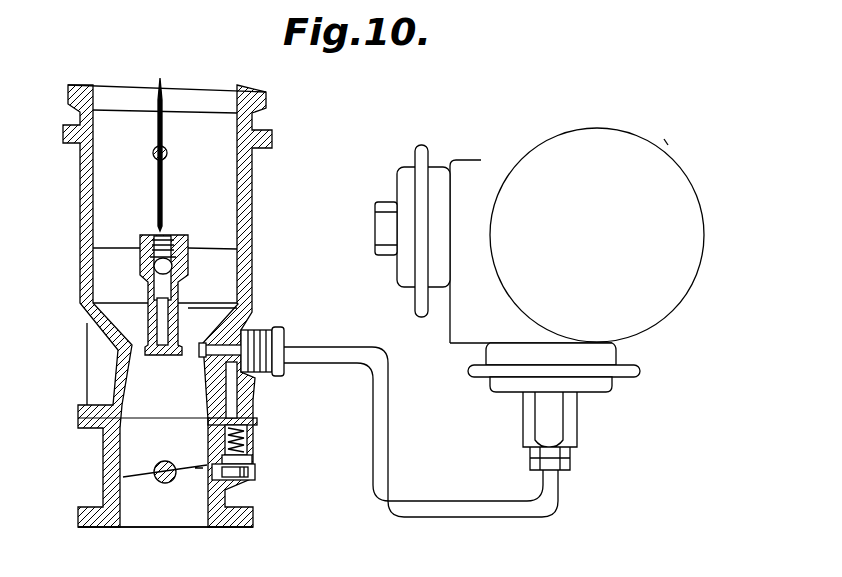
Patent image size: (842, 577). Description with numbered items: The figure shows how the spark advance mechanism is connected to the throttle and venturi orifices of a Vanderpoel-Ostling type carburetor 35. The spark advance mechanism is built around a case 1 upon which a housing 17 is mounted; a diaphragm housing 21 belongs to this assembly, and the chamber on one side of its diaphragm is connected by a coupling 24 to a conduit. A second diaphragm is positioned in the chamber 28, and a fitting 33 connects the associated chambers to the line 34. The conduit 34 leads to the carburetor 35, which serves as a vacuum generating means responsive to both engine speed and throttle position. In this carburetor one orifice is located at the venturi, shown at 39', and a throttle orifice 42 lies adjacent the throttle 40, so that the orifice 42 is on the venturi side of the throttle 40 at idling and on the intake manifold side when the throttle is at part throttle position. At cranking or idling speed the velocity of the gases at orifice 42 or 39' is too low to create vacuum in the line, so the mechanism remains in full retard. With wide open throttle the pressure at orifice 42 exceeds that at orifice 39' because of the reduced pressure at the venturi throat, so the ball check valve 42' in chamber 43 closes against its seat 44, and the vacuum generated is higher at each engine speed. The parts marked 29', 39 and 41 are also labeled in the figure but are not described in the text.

The case 1 is at (513, 158).
The housing 17 is at (510, 160).
The housing 21 is at (427, 146).
The coupling 24 is at (385, 205).
The chamber 28 is at (468, 370).
The cylinder wall 29' is at (186, 306).
The fitting 33 is at (525, 427).
The line 34 is at (364, 332).
The carburetor 35 is at (254, 521).
The valve nipple 39 is at (271, 365).
The orifice at the venturi 39' is at (204, 368).
The throttle 40 is at (274, 328).
The nut 41 is at (256, 459).
The throttle orifice 42 is at (181, 488).
The ball check valve 42' is at (266, 439).
The chamber 43 is at (258, 463).
The seat 44 is at (247, 424).